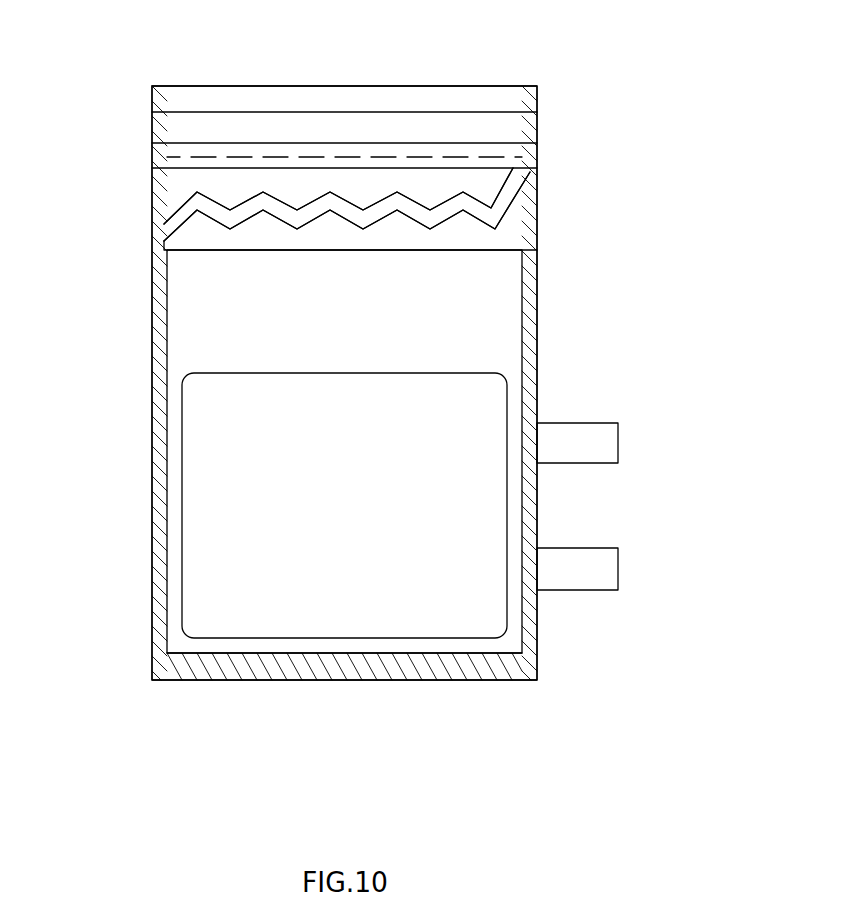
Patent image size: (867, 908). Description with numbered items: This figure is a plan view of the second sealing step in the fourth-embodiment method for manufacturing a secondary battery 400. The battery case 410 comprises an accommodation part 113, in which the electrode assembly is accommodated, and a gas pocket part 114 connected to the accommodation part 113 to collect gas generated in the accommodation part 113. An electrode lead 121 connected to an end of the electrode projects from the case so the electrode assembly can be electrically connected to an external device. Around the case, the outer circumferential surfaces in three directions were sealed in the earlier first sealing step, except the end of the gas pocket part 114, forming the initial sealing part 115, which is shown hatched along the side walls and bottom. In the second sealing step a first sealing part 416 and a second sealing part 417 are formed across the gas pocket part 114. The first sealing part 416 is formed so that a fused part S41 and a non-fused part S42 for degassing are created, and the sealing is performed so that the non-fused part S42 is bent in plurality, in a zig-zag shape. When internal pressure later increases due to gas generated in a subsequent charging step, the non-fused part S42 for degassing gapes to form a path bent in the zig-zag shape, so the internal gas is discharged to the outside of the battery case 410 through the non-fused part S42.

The secondary battery 400 is at (687, 40).
The battery case 410 is at (140, 88).
The second sealing part 417 is at (502, 125).
The first sealing part 416 is at (487, 183).
The fused part S41 is at (166, 186).
The non-fused part for degassing S42 is at (166, 213).
The gas pocket part 114 is at (202, 310).
The initial sealing part 115 is at (183, 672).
The accommodation part 113 is at (347, 615).
The electrode lead 121 is at (582, 583).